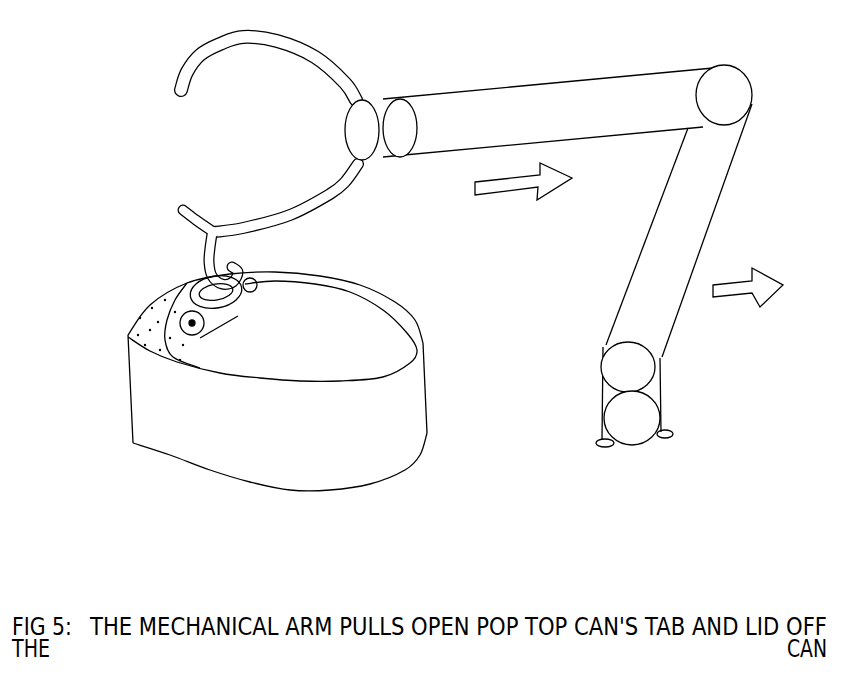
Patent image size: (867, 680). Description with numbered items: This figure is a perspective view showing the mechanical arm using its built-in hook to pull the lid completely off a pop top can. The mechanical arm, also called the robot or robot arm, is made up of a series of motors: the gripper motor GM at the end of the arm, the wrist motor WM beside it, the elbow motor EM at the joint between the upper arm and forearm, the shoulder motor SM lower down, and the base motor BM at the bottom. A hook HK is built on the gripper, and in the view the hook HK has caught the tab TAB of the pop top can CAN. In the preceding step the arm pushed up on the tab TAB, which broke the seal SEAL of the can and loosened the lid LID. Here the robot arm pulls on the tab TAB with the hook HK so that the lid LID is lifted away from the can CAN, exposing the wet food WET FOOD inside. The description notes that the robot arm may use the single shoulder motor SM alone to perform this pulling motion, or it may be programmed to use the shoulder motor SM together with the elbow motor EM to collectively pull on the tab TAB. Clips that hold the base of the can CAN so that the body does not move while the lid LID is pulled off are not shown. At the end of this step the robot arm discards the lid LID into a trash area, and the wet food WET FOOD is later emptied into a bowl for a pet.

The gripper motor GM is at (367, 117).
The wrist motor WM is at (408, 117).
The elbow motor EM is at (737, 90).
The hook on gripper HK is at (207, 258).
The pull tab TAB is at (187, 288).
The seal SEAL is at (337, 288).
The lid on the can LID is at (353, 320).
The wet food WET FOOD is at (140, 315).
The shoulder motor SM is at (648, 368).
The base motor BM is at (650, 417).
The pop top (pull tab) can CAN is at (278, 478).